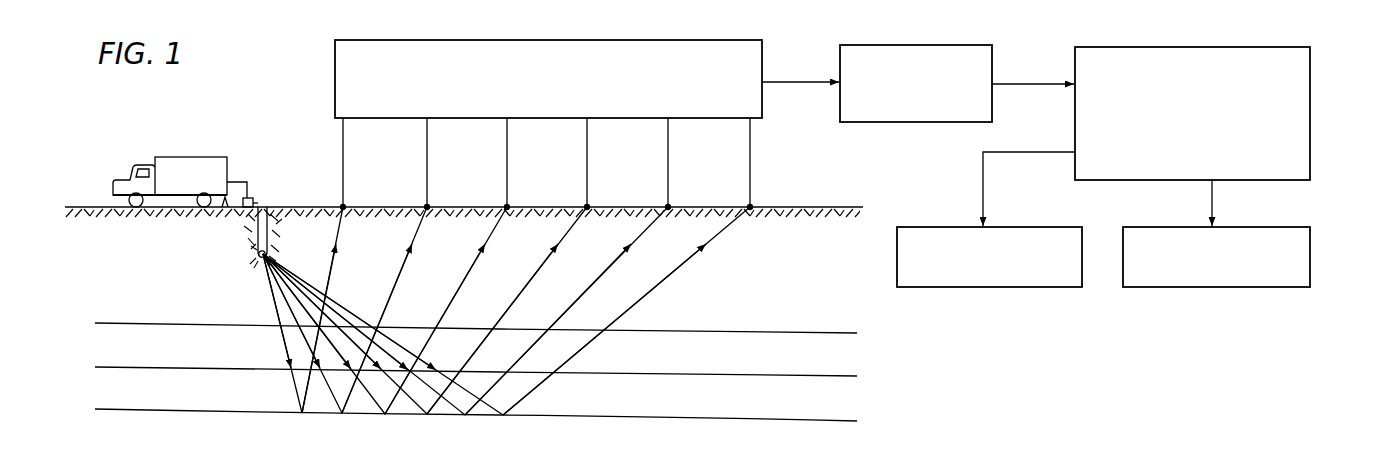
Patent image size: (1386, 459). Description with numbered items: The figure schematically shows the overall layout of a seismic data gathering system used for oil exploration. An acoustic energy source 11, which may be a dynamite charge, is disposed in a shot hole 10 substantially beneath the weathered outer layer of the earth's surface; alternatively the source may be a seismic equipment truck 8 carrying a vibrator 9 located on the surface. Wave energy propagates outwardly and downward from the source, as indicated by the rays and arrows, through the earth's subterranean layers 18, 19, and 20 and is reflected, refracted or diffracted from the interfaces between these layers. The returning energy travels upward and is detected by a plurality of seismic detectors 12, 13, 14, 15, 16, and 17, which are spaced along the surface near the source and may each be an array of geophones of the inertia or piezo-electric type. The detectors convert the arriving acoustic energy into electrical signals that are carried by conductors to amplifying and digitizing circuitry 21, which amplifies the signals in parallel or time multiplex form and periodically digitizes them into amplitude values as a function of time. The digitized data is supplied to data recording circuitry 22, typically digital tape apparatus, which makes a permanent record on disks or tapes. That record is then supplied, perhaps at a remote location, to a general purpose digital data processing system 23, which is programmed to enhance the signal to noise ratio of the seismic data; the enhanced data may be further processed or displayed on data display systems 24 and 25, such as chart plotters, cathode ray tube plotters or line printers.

The seismic equipment truck 8 is at (195, 158).
The vibrator 9 is at (253, 200).
The shot hole 10 is at (256, 240).
The acoustic energy source 11 is at (257, 259).
The seismic detector 12 is at (331, 164).
The seismic detector 13 is at (413, 164).
The seismic detector 14 is at (491, 164).
The seismic detector 15 is at (572, 164).
The seismic detector 16 is at (654, 164).
The seismic detector 17 is at (735, 164).
The earth layer 18 is at (699, 410).
The earth layer 19 is at (704, 365).
The earth layer 20 is at (741, 301).
The amplifying and digitizing circuitry 21 is at (568, 40).
The data recording circuitry 22 is at (907, 45).
The general purpose digital data processing system 23 is at (1177, 47).
The data display system 24 is at (1032, 227).
The data display system 25 is at (1288, 227).